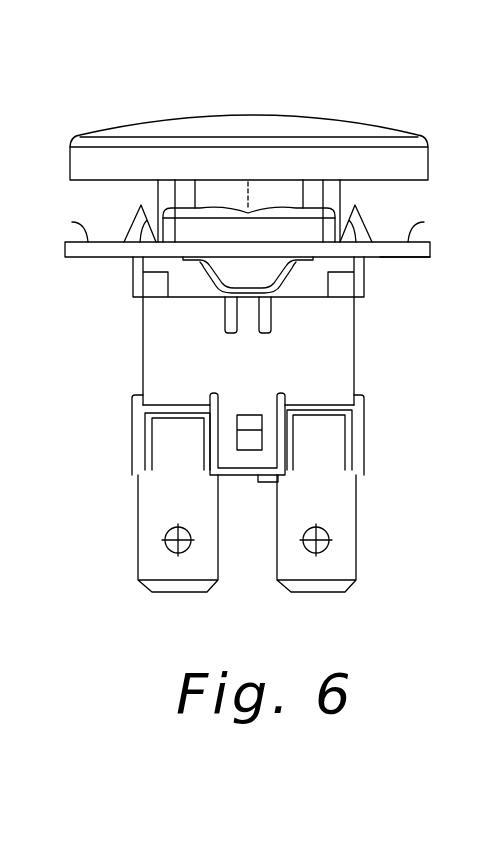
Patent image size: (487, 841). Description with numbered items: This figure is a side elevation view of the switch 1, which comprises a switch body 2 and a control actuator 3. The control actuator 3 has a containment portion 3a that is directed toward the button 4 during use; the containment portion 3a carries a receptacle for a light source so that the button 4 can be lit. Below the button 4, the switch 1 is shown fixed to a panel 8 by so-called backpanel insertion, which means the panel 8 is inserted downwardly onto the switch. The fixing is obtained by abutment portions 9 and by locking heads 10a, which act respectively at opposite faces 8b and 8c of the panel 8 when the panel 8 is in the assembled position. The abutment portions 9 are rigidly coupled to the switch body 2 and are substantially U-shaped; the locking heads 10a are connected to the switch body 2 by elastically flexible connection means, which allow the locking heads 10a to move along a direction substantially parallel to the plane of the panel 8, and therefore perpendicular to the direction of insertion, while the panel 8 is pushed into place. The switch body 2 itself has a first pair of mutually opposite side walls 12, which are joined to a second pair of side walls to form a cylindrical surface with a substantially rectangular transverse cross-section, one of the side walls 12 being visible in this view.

The switch 1 is at (104, 502).
The switch body 2 is at (172, 352).
The control actuator 3 is at (292, 233).
The containment portion 3a is at (312, 158).
The button 4 is at (313, 157).
The panel 8 is at (432, 248).
The face of the panel 8b is at (226, 219).
The face of the panel 8c is at (401, 259).
The abutment portion 9 is at (283, 287).
The locking head 10a is at (138, 230).
The side wall 12 is at (312, 365).